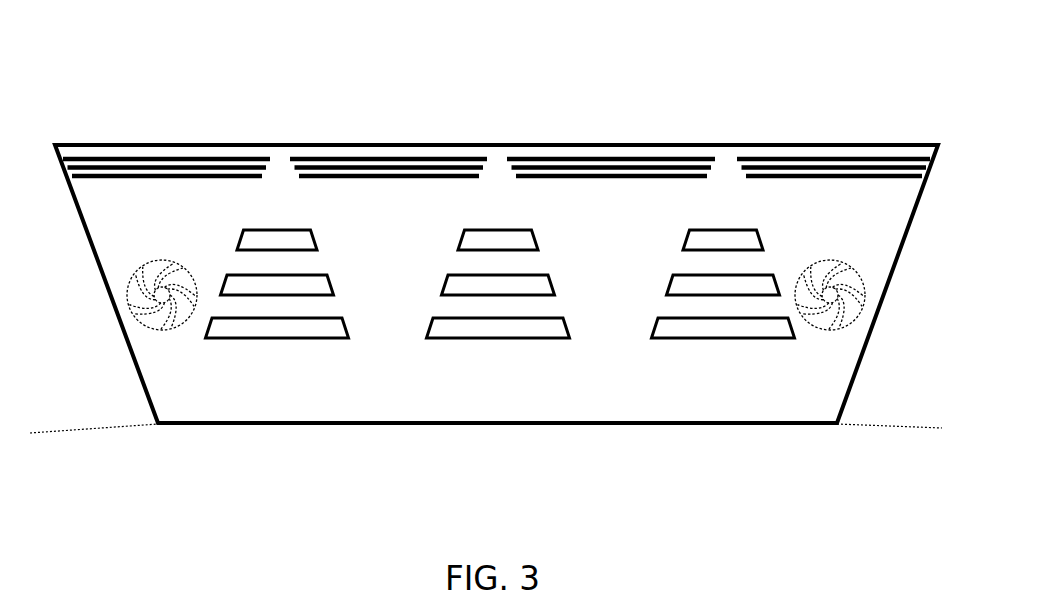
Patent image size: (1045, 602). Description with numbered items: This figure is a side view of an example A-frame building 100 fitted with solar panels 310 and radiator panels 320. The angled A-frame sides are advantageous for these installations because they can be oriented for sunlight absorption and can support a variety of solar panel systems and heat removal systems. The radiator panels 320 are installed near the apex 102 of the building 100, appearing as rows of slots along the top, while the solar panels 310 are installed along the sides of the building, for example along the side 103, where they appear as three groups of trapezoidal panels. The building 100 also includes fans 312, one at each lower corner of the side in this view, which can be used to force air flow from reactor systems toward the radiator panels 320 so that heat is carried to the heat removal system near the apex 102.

The A-frame building 100 is at (256, 101).
The apex 102 is at (643, 143).
The side 103 is at (810, 372).
The solar panels 310 is at (301, 350).
The fans 312 is at (137, 313).
The radiator panels 320 is at (392, 148).